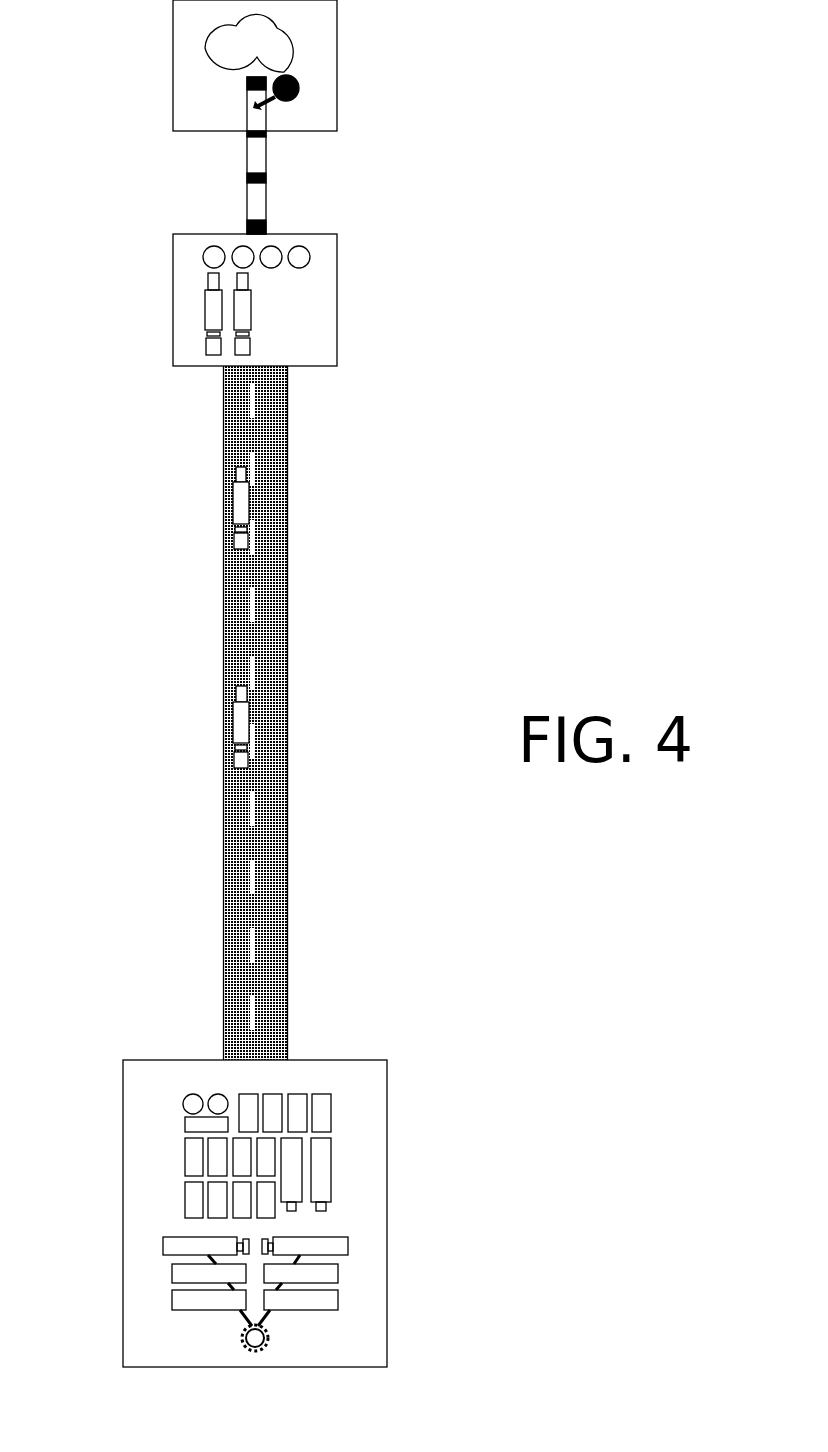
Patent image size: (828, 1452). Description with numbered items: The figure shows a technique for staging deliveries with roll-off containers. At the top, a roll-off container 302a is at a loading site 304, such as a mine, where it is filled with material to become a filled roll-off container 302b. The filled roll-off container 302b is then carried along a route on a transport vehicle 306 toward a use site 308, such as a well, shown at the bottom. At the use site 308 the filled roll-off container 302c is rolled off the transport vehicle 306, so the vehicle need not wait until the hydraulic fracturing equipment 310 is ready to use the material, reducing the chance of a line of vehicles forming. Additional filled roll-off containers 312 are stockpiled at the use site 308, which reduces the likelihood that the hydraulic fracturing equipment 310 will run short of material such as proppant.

The roll-off container 302a is at (263, 112).
The filled roll-off container 302b is at (233, 510).
The filled roll-off container 302c is at (185, 1160).
The loading site 304 is at (337, 90).
The transport vehicle 306 is at (249, 537).
The use site 308 is at (387, 1185).
The hydraulic fracturing equipment 310 is at (395, 1234).
The additional filled roll-off containers 312 is at (331, 1114).